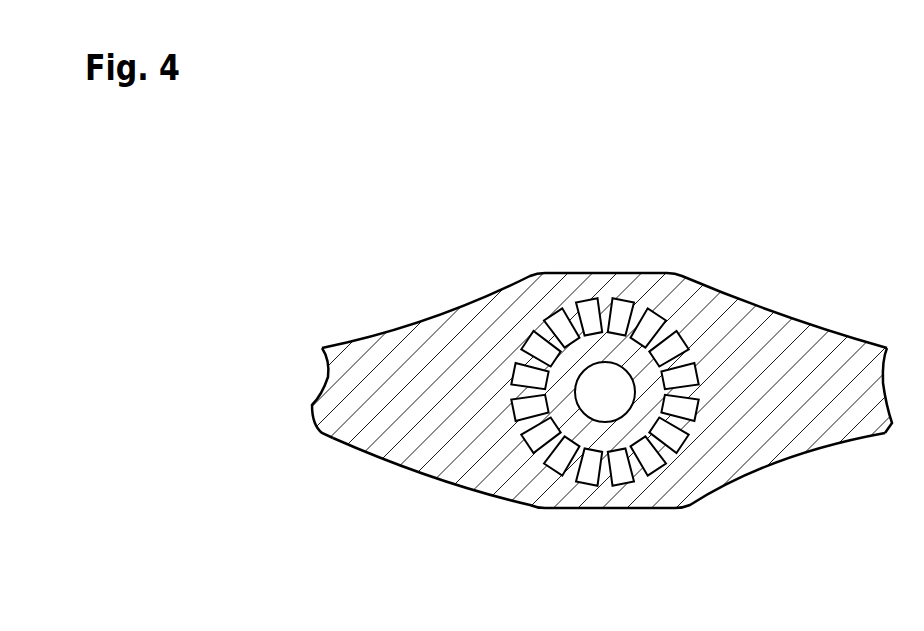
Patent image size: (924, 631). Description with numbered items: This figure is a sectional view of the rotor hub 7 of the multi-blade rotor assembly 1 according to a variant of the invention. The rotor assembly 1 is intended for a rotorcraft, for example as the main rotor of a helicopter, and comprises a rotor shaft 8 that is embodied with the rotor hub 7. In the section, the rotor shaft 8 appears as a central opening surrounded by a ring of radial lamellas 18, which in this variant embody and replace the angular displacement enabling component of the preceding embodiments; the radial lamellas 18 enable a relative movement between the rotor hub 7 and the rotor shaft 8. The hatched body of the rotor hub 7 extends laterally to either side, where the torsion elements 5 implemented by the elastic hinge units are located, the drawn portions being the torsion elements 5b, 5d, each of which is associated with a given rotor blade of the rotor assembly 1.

The rotor assembly 1 is at (477, 217).
The torsion elements 5 is at (822, 458).
The torsion element 5b is at (845, 338).
The torsion element 5d is at (356, 340).
The rotor hub 7 is at (757, 322).
The rotor shaft 8 is at (605, 361).
The radial lamellas 18 is at (568, 478).